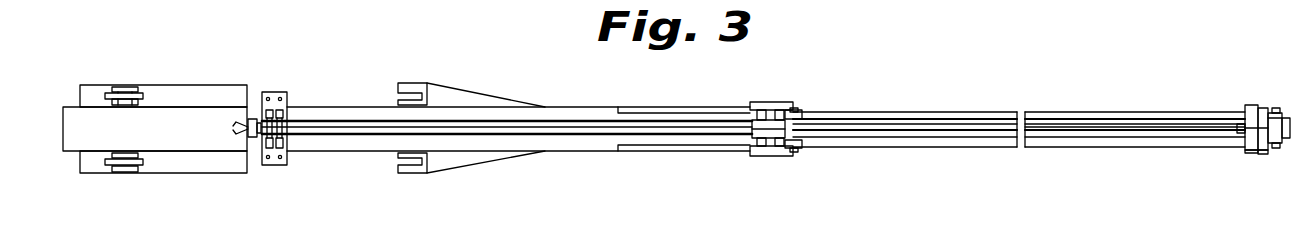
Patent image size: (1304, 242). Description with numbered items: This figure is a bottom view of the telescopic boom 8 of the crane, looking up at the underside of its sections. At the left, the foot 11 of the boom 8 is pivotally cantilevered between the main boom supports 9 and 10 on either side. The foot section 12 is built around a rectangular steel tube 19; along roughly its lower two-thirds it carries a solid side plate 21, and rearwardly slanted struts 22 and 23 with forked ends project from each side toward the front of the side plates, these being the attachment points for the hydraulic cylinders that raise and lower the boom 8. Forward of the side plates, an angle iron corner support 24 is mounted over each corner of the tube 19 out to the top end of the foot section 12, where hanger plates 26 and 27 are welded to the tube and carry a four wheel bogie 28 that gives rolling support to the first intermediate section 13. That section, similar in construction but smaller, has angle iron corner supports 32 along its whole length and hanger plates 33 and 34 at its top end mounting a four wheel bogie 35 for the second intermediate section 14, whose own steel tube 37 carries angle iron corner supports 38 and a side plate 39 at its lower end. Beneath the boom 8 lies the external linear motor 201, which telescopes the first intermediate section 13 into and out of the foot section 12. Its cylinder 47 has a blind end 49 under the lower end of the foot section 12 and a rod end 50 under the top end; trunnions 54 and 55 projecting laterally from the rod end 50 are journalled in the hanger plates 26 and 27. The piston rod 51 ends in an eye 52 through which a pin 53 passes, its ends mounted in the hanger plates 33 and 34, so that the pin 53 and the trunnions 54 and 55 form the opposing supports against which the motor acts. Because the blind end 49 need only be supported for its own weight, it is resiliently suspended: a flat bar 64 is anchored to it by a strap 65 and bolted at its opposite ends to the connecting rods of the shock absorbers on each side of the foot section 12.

The boom 8 is at (908, 152).
The main boom support 9 is at (116, 88).
The main boom support 10 is at (128, 173).
The foot of the boom 11 is at (72, 108).
The foot section 12 is at (372, 153).
The first intermediate section 13 is at (947, 107).
The second intermediate section 14 is at (1283, 95).
The steel tube 19 is at (605, 106).
The side plate 21 is at (995, 118).
The strut 22 is at (426, 84).
The strut 23 is at (415, 181).
The angle iron corner support 24 is at (692, 106).
The hanger plate 26 is at (790, 108).
The hanger plate 27 is at (785, 158).
The four wheel bogie 28 is at (905, 97).
The angle iron corner support 32 is at (1097, 101).
The hanger plate 33 is at (1263, 107).
The hanger plate 34 is at (1250, 154).
The four wheel bogie 35 is at (1263, 155).
The steel tube 37 is at (1279, 148).
The angle iron corner support 38 is at (1276, 144).
The side plate 39 is at (1288, 106).
The cylinder 47 is at (358, 122).
The blind end 49 is at (253, 118).
The rod end 50 is at (800, 140).
The piston rod 51 is at (1146, 127).
The eye 52 is at (1240, 134).
The pin 53 is at (1251, 104).
The trunnion 54 is at (762, 86).
The trunnion 55 is at (755, 147).
The flat bar 64 is at (285, 93).
The strap 65 is at (282, 143).
The external linear motor 201 is at (569, 140).